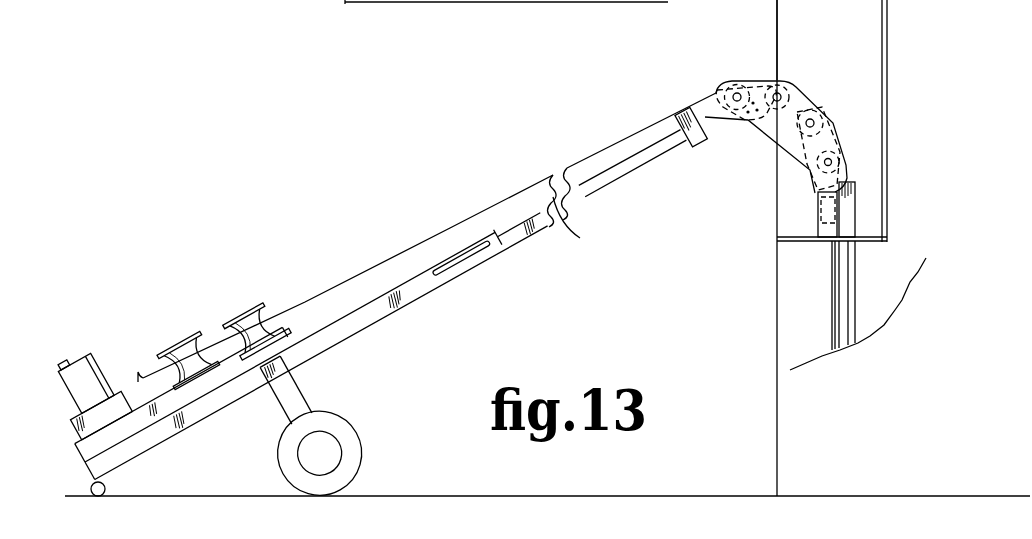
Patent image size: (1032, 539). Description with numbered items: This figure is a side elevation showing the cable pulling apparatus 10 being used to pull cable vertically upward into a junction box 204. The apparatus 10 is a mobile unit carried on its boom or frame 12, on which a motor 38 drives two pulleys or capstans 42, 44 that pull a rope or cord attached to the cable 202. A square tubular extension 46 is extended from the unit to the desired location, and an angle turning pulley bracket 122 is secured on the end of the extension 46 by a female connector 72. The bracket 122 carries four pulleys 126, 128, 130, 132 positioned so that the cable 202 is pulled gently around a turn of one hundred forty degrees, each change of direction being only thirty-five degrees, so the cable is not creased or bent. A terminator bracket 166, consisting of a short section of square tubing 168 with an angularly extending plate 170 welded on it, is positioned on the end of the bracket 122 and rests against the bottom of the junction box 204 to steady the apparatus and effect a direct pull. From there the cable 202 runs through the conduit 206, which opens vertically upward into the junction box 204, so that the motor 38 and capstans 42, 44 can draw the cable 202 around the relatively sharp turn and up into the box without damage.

The cable pulling apparatus 10 is at (370, 250).
The boom 12 is at (368, 320).
The motor 38 is at (80, 356).
The capstan 42 is at (170, 356).
The capstan 44 is at (250, 312).
The square tubular extension 46 is at (603, 186).
The female connector 72 is at (700, 140).
The angle turning pulley bracket 122 is at (745, 140).
The pulley 126 is at (735, 76).
The pulley 128 is at (787, 78).
The pulley 130 is at (830, 111).
The pulley 132 is at (842, 150).
The terminator bracket 166 is at (802, 200).
The square tubing 168 is at (818, 220).
The angularly extending plate 170 is at (850, 220).
The cable 202 is at (437, 232).
The junction box 204 is at (800, 0).
The conduit 206 is at (832, 312).